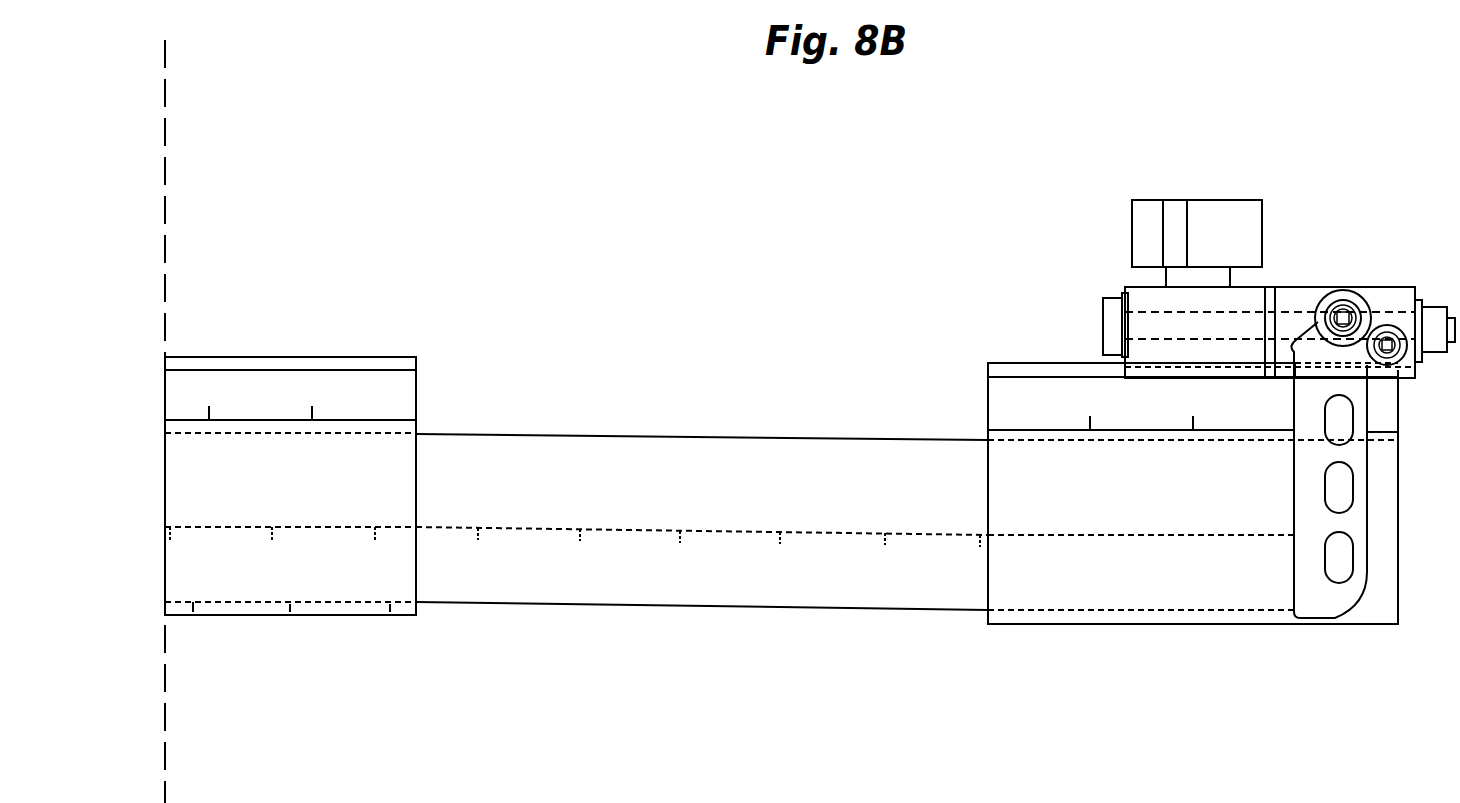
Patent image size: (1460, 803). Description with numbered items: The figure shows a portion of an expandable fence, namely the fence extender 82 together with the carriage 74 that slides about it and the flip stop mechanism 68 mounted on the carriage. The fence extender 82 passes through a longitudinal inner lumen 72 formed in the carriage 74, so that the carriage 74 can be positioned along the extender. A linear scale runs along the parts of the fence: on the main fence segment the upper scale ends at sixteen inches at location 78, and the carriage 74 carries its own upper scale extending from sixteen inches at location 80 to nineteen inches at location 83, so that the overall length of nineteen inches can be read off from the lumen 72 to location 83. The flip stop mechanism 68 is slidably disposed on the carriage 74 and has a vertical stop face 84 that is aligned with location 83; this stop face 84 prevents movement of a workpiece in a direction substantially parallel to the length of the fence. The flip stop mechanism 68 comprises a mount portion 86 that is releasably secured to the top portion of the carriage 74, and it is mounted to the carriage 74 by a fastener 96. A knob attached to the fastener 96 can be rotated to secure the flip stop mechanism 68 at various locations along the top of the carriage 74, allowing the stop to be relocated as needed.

The flip stop mechanism 68 is at (1300, 247).
The longitudinal inner lumen 72 is at (1073, 517).
The carriage 74 is at (1041, 363).
The location 78 is at (416, 392).
The location 80 is at (988, 405).
The fence extender 82 is at (563, 435).
The location 83 is at (1294, 624).
The vertical stop face 84 is at (1350, 597).
The mount portion 86 is at (1137, 295).
The fastener 96 is at (1104, 322).